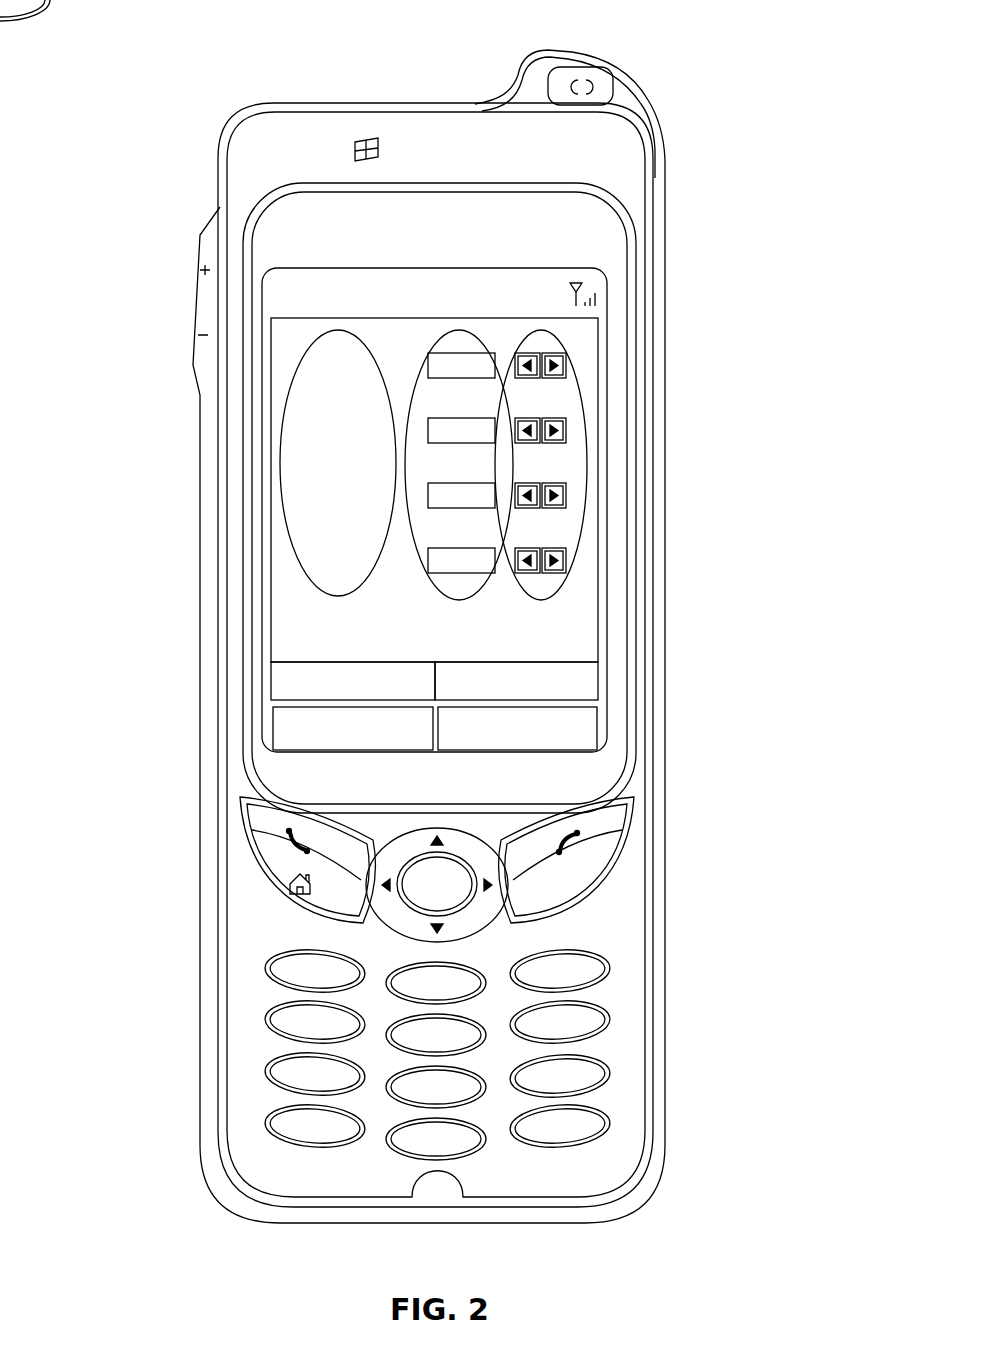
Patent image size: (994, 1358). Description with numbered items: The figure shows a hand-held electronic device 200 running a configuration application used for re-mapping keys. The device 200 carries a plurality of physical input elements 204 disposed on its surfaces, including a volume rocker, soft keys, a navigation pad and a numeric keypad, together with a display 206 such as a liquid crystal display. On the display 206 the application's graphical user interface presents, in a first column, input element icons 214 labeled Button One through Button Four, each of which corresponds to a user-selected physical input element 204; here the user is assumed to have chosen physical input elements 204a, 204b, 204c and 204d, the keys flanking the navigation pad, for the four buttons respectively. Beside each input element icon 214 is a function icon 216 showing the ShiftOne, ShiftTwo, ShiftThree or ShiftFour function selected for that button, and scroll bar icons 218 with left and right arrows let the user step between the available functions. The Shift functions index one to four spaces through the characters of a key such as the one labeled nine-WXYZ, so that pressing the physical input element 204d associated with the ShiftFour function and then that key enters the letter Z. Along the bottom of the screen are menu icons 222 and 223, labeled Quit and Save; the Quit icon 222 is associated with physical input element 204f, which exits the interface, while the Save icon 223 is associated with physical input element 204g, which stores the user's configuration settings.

The hand-held electronic device 200 is at (130, 40).
The physical input elements 204 is at (185, 258).
The physical input element 204a is at (263, 810).
The physical input element 204b is at (267, 850).
The physical input element 204c is at (610, 817).
The physical input element 204d is at (610, 855).
The physical input element 204f is at (287, 723).
The physical input element 204g is at (582, 722).
The display 206 is at (553, 283).
The input element icons 214 is at (335, 598).
The function icons 216 is at (459, 600).
The scroll bar icons 218 is at (541, 600).
The menu icon 222 is at (287, 687).
The menu icon 223 is at (587, 685).